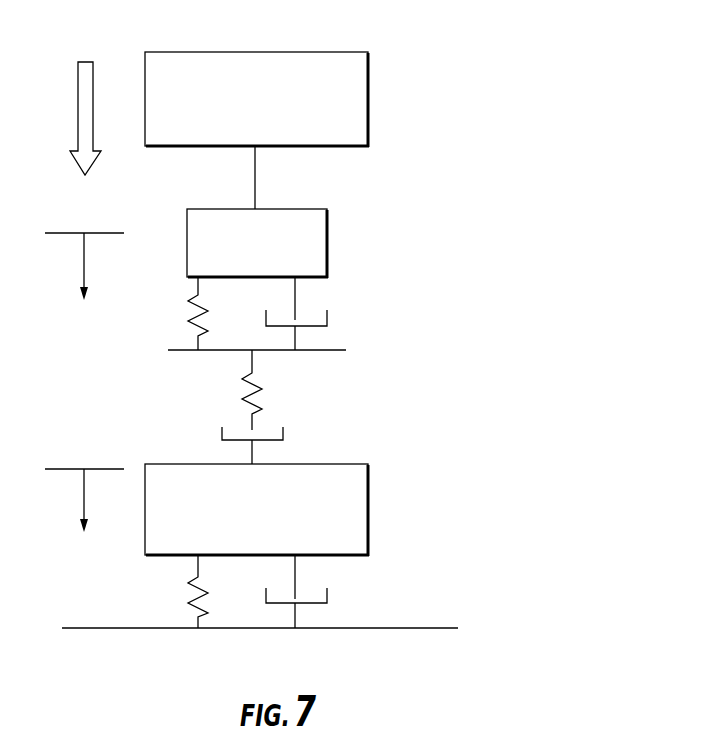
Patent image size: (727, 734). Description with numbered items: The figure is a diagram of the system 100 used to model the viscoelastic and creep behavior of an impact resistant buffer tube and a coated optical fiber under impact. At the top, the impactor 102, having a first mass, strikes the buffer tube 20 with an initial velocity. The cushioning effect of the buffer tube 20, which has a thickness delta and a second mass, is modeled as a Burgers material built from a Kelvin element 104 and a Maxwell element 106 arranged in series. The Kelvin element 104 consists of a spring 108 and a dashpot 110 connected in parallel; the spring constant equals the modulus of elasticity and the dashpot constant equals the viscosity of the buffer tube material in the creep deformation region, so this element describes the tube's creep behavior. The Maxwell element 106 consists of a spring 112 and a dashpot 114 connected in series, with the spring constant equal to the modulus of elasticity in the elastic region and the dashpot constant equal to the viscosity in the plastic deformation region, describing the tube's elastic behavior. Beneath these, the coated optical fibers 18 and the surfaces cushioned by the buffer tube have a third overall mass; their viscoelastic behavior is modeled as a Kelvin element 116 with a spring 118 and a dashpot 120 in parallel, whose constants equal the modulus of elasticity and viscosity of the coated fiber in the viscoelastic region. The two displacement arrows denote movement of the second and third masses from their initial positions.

The system 100 is at (545, 126).
The impactor 102 is at (369, 95).
The Kelvin element 104 is at (124, 334).
The Maxwell element 106 is at (170, 411).
The spring 108 is at (197, 291).
The dashpot 110 is at (297, 298).
The spring 112 is at (253, 362).
The dashpot 114 is at (283, 428).
The Kelvin element 116 is at (116, 598).
The spring 118 is at (200, 572).
The dashpot 120 is at (312, 606).
The buffer tube 20 is at (374, 211).
The coated optical fibers 18 is at (374, 466).